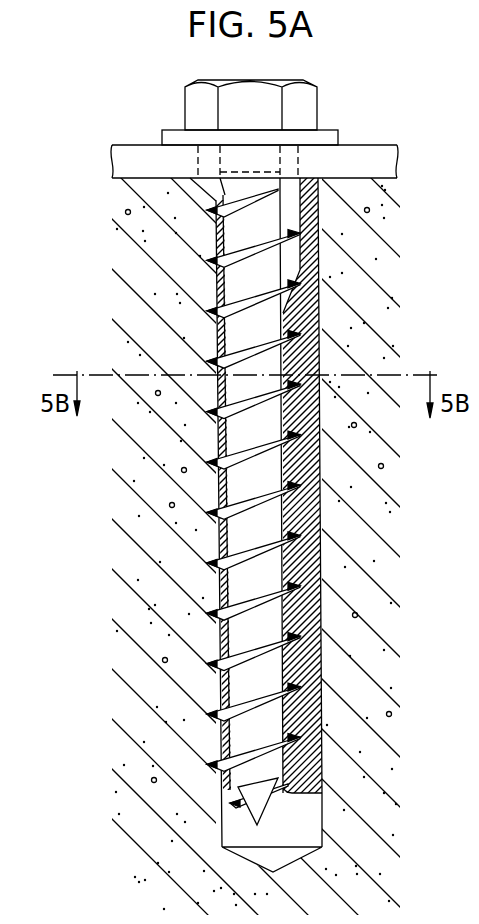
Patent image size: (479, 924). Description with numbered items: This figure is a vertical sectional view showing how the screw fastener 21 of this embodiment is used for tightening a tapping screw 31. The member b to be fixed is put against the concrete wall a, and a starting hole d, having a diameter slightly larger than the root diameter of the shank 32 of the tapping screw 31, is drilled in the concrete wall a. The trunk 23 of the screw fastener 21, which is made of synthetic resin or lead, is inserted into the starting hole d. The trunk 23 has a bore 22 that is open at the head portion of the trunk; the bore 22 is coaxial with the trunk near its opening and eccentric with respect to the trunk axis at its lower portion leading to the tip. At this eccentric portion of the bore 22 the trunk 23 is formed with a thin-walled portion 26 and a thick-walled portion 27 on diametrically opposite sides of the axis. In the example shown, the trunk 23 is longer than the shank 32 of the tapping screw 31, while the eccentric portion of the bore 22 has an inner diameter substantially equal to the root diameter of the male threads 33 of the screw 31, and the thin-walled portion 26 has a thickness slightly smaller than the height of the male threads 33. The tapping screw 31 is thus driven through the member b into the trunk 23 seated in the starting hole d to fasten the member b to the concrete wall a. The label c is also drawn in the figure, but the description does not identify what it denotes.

The tapping screw 31 is at (320, 88).
The washer c is at (292, 147).
The member to be fixed b is at (380, 163).
The concrete wall a is at (367, 648).
The screw fastener 21 is at (324, 350).
The trunk 23 is at (300, 472).
The thick-walled portion 27 is at (316, 592).
The shank 32 is at (238, 482).
The male threads 33 is at (220, 571).
The thin-walled portion 26 is at (222, 693).
The bore 22 is at (282, 722).
The starting hole d is at (323, 813).